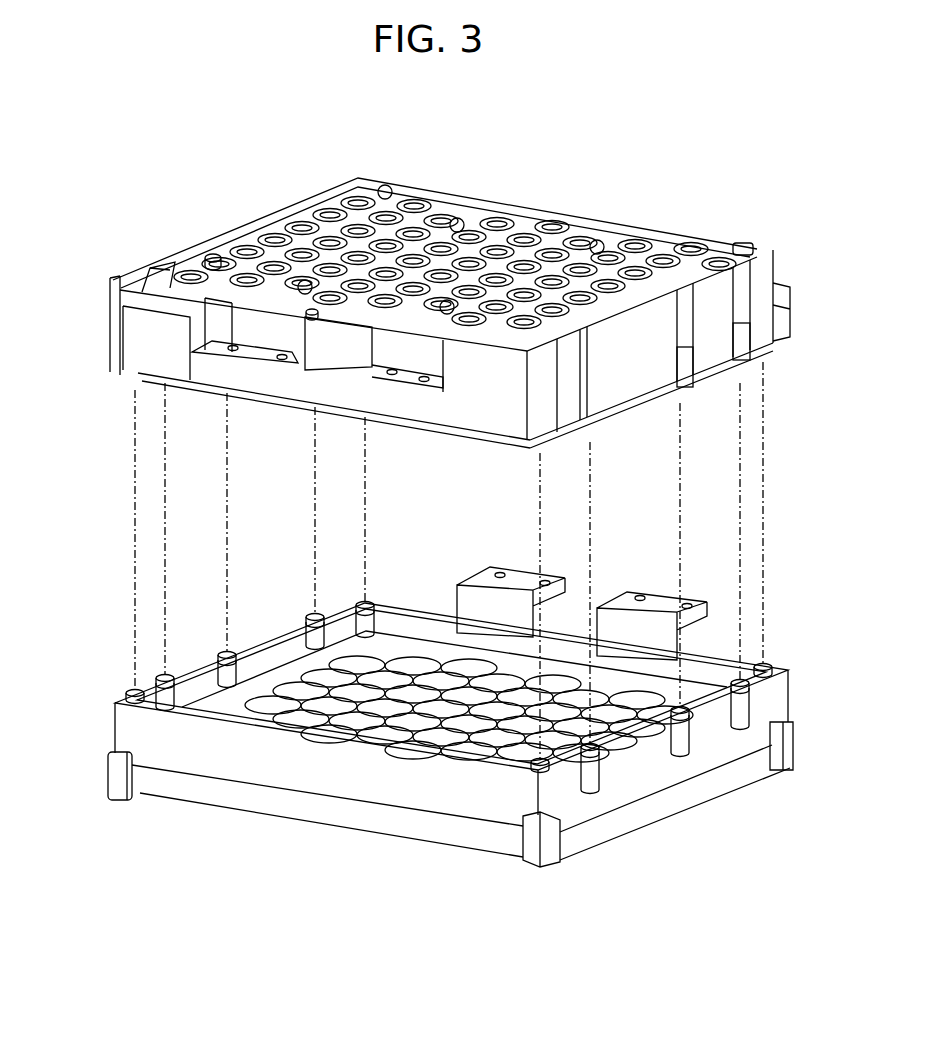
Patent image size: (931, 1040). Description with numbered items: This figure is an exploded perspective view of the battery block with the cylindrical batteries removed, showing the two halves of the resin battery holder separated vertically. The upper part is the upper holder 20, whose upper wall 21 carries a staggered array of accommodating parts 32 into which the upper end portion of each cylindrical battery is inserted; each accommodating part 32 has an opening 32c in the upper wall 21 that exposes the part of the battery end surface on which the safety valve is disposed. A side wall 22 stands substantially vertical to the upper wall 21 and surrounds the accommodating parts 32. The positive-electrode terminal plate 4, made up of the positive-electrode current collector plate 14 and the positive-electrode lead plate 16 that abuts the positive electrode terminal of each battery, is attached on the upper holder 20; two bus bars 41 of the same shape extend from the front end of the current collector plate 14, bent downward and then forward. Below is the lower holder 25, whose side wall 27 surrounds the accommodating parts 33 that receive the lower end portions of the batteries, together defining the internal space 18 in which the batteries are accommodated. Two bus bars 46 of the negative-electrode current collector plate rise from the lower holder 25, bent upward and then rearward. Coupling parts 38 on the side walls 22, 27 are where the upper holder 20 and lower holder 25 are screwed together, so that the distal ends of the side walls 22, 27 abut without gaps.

The terminal plate 4 is at (288, 175).
The positive-electrode current collector plate 14 is at (303, 224).
The positive-electrode lead plate 16 is at (273, 236).
The internal space 18 is at (412, 606).
The upper holder 20 is at (770, 245).
The upper wall 21 is at (213, 255).
The side wall 22 is at (130, 348).
The lower holder 25 is at (790, 672).
The side wall 27 is at (128, 732).
The accommodating part 32 is at (527, 233).
The opening 32c is at (153, 275).
The accommodating part 33 is at (383, 738).
The coupling part 38 is at (229, 652).
The bus bar 41 is at (262, 327).
The bus bar 46 is at (655, 605).